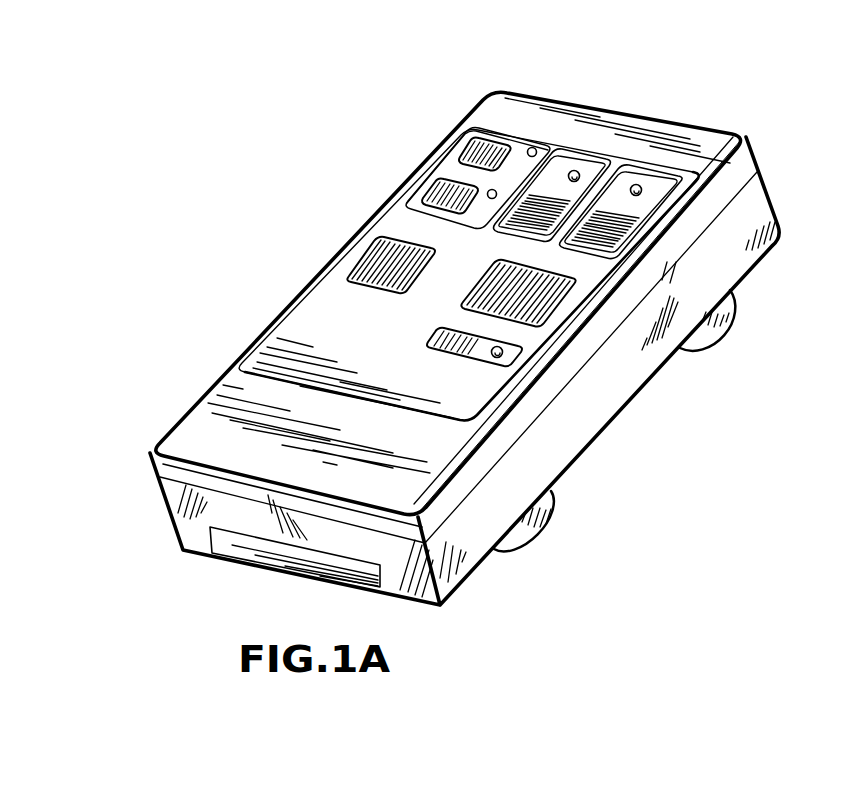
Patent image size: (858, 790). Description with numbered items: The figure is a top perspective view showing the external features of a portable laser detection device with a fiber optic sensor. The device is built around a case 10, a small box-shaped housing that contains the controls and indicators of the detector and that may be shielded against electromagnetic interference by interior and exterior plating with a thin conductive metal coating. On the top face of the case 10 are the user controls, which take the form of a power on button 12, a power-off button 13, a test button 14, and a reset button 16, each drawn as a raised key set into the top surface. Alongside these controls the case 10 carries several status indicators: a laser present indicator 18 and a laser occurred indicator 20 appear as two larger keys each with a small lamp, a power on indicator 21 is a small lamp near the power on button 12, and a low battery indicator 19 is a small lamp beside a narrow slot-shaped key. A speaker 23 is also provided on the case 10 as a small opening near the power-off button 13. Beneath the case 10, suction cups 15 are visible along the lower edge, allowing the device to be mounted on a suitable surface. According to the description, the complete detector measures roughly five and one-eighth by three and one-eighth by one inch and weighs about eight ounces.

The case 10 is at (782, 210).
The power on button 12 is at (470, 126).
The power-off button 13 is at (427, 188).
The test button 14 is at (353, 252).
The suction cups 15 is at (561, 512).
The reset button 16 is at (572, 304).
The laser present indicator 18 is at (579, 172).
The low battery indicator 19 is at (523, 357).
The laser occurred indicator 20 is at (641, 185).
The power on indicator 21 is at (534, 148).
The speaker 23 is at (487, 194).